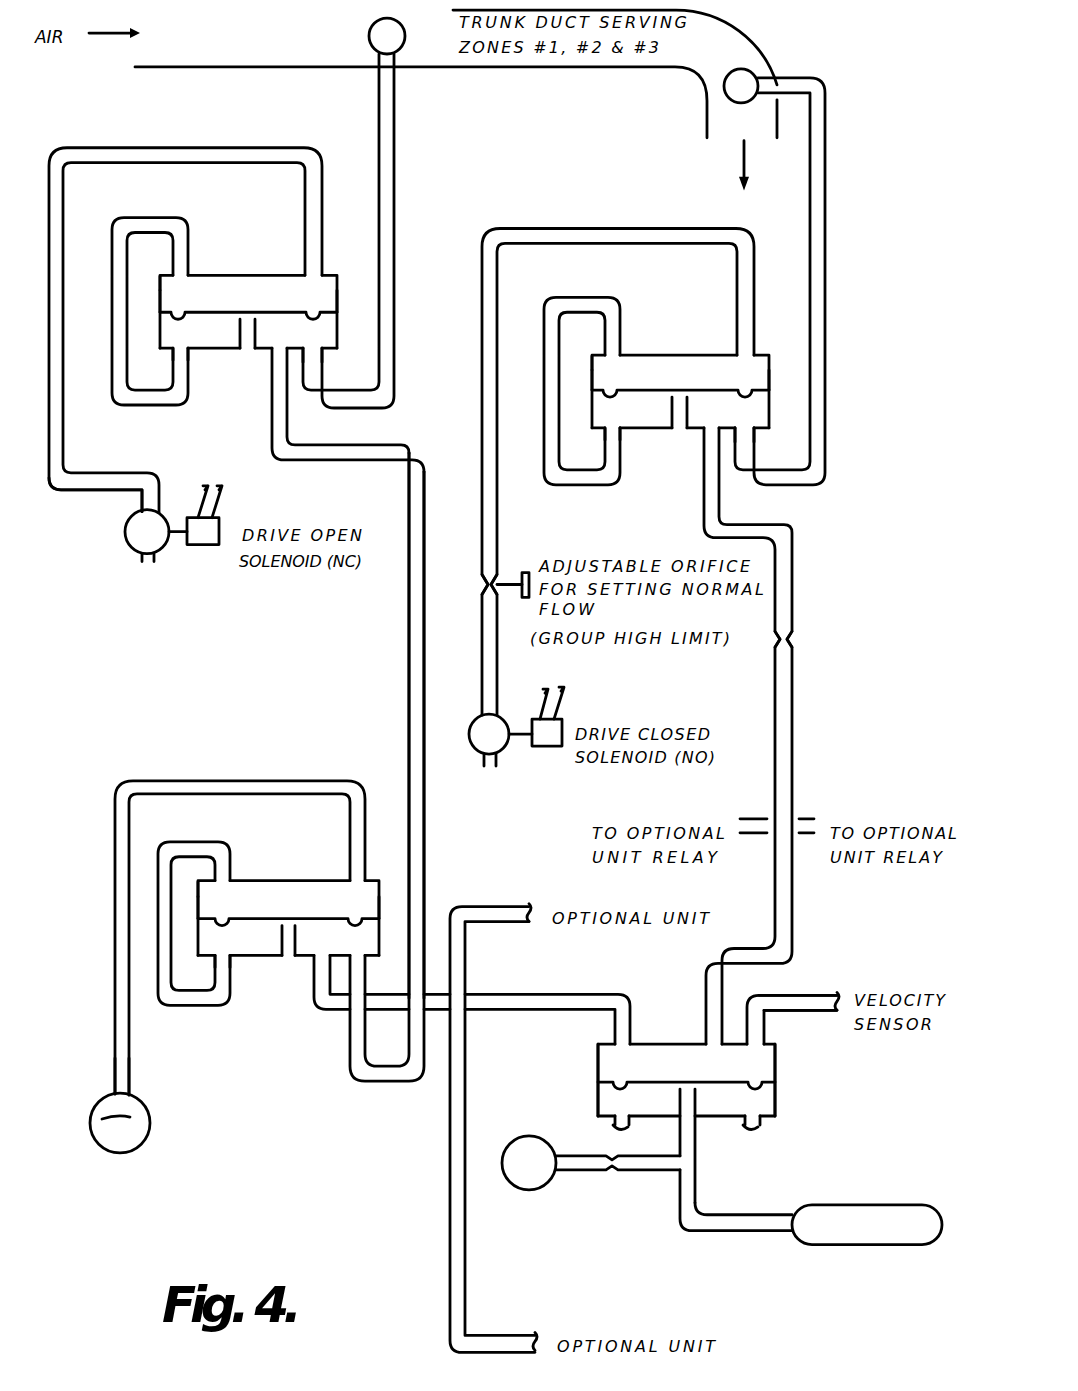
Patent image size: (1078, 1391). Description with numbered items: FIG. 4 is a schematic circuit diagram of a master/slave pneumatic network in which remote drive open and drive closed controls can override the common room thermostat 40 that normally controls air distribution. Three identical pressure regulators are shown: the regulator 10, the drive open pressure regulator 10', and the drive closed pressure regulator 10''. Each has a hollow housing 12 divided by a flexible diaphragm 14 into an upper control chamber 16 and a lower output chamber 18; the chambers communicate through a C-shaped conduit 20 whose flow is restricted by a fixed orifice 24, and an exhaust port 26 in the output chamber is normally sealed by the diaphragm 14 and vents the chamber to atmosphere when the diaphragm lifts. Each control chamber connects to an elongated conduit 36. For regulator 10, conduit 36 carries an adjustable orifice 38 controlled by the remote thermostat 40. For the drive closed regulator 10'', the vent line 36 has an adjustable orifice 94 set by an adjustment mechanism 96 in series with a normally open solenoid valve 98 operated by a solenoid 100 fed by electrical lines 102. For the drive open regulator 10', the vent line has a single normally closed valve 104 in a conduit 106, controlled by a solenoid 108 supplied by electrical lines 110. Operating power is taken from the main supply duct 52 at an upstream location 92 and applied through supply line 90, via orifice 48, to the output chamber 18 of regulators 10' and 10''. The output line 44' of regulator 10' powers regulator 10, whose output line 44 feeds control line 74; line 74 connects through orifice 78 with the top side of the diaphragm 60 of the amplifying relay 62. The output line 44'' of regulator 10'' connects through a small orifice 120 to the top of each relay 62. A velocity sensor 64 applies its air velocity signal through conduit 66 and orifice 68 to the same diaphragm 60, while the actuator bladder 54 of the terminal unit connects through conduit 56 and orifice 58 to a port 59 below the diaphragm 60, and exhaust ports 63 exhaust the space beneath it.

The pressure regulator 10 is at (288, 881).
The drive open pressure regulator 10' is at (248, 263).
The drive closed pressure regulator 10'' is at (680, 342).
The housing 12 is at (252, 276).
The diaphragm 14 is at (232, 312).
The control chamber 16 is at (197, 278).
The output chamber 18 is at (205, 337).
The C-shaped conduit 20 is at (125, 406).
The fixed orifice 24 is at (172, 378).
The exhaust port 26 is at (246, 340).
The conduit 36 is at (168, 150).
The adjustable orifice 38 is at (124, 1096).
The room thermostat 40 is at (150, 1125).
The output line 44 is at (398, 744).
The output line of drive open regulator 44' is at (348, 410).
The output line of drive closed regulator 44'' is at (762, 736).
The orifice 48 is at (320, 378).
The main supply duct 52 is at (717, 110).
The actuator bladder 54 is at (888, 1210).
The conduit 56 is at (683, 1220).
The orifice 58 is at (611, 1172).
The port 59 is at (680, 1095).
The diaphragm 60 is at (703, 1084).
The amplifying relay 62 is at (790, 1092).
The exhaust ports 63 is at (617, 1127).
The velocity sensor 64 is at (883, 1042).
The conduit 66 is at (808, 996).
The orifice 68 is at (763, 1025).
The control line 74 is at (500, 912).
The orifice 78 is at (626, 1027).
The supply line 90 is at (822, 305).
The upstream location 92 is at (396, 48).
The adjustable orifice 94 is at (480, 585).
The adjustment mechanism 96 is at (524, 572).
The normally open solenoid valve 98 is at (474, 745).
The solenoid 100 is at (548, 748).
The electrical lines 102 is at (541, 693).
The normally closed solenoid valve 104 is at (127, 535).
The conduit 106 is at (120, 476).
The solenoid 108 is at (210, 548).
The electrical lines 110 is at (212, 500).
The orifice 120 is at (793, 640).